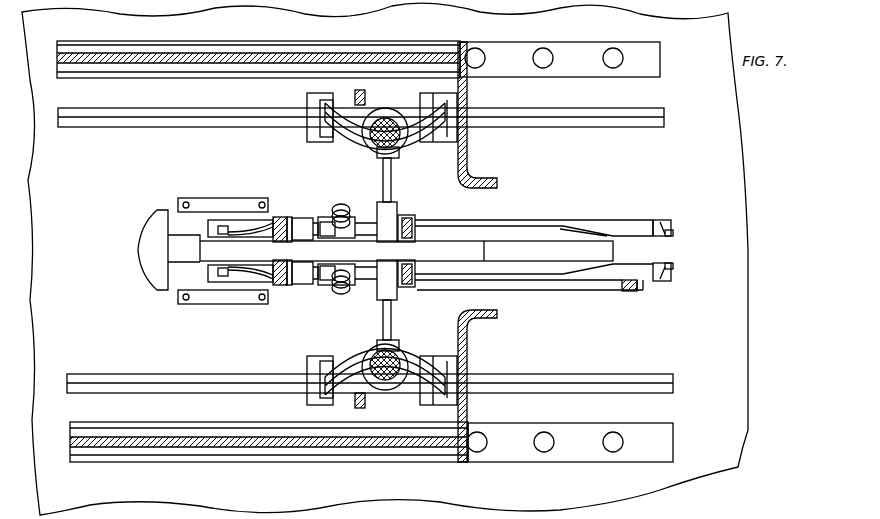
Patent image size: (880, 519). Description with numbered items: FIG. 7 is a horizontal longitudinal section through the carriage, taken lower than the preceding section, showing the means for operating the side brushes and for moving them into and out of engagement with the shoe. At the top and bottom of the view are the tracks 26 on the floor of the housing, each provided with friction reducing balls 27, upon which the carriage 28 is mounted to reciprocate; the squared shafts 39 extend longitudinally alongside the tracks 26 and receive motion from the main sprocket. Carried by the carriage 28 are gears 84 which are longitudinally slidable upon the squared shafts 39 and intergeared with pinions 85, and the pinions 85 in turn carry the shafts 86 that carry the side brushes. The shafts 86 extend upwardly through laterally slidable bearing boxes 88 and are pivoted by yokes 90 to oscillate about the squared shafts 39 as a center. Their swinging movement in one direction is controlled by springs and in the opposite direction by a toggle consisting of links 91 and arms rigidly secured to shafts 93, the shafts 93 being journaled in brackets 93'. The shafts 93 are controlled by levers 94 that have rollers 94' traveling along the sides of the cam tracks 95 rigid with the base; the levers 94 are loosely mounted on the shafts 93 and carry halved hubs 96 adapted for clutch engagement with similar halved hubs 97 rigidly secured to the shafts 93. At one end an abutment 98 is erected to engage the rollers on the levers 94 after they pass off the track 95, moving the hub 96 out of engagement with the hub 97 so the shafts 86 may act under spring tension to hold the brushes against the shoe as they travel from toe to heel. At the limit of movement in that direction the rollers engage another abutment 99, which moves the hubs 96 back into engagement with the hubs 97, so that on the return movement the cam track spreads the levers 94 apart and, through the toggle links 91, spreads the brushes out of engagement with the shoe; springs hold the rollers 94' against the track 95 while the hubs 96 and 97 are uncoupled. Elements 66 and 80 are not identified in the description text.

The tracks 26 is at (514, 68).
The balls 27 is at (615, 68).
The carriage 28 is at (469, 357).
The squared shafts 39 is at (581, 126).
The ball 66 is at (377, 150).
The sleeve 80 is at (617, 278).
The gears 84 is at (364, 103).
The pinions 85 is at (398, 145).
The shafts 86 is at (376, 356).
The bearing boxes 88 is at (362, 140).
The yokes 90 is at (312, 125).
The links 91 is at (391, 205).
The shafts 93 is at (374, 250).
The brackets 93' is at (315, 252).
The levers 94 is at (279, 252).
The rollers 94' is at (328, 253).
The cam tracks 95 is at (458, 223).
The halved hubs 96 is at (366, 243).
The halved hubs 97 is at (299, 215).
The abutment 98 is at (157, 275).
The abutment 99 is at (664, 221).